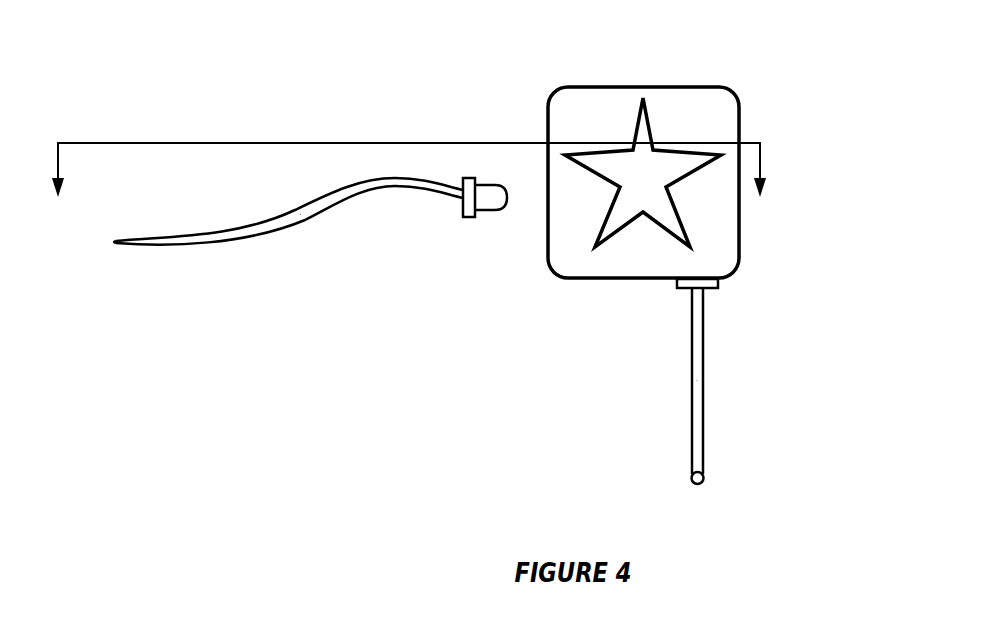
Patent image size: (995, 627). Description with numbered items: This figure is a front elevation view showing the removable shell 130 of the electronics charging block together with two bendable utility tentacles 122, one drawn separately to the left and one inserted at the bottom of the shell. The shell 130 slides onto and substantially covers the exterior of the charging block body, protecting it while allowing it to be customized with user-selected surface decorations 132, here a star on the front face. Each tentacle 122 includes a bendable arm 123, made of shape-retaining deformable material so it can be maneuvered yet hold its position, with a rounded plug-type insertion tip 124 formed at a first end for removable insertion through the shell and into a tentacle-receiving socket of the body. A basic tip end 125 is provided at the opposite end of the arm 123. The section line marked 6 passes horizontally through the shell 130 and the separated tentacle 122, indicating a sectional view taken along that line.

The section line 6- 6 is at (409, 187).
The removable shell 130 is at (750, 96).
The surface decorations 132 is at (643, 215).
The bendable utility tentacle 122 is at (192, 268).
The bendable arm 123 is at (356, 192).
The insertion tip 124 is at (484, 194).
The tip end 125 is at (128, 238).